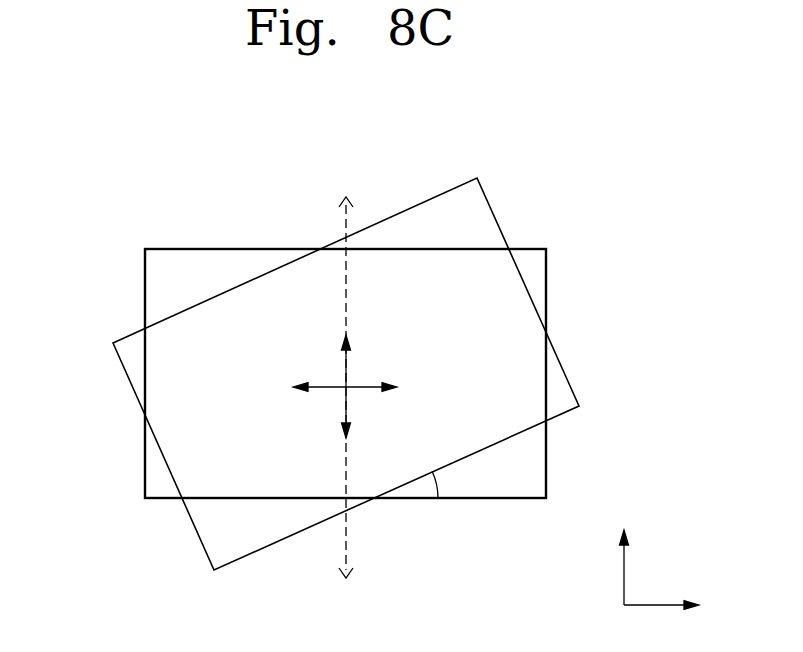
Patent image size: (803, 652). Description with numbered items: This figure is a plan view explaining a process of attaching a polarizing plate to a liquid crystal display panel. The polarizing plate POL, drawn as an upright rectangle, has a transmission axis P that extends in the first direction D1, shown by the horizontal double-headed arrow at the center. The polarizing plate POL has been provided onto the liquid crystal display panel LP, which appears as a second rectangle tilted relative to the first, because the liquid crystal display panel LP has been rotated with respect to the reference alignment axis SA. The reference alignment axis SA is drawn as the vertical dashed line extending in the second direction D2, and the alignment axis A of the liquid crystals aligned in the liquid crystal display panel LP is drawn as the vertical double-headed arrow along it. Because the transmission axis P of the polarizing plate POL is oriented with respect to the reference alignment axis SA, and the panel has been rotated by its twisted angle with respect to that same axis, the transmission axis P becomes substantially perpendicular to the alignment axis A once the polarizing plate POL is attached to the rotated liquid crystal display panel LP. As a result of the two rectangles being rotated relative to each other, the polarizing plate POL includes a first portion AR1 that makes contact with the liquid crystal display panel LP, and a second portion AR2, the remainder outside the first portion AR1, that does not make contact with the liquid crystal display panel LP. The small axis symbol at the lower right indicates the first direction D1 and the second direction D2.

The polarizing plate POL is at (546, 295).
The liquid crystal display panel LP is at (497, 218).
The first portion AR1 is at (175, 358).
The second portion AR2 is at (162, 283).
The reference alignment axis SA is at (329, 387).
The alignment axis A is at (357, 385).
The transmission axis P is at (352, 387).
The first direction D1 is at (678, 605).
The second direction D2 is at (625, 555).